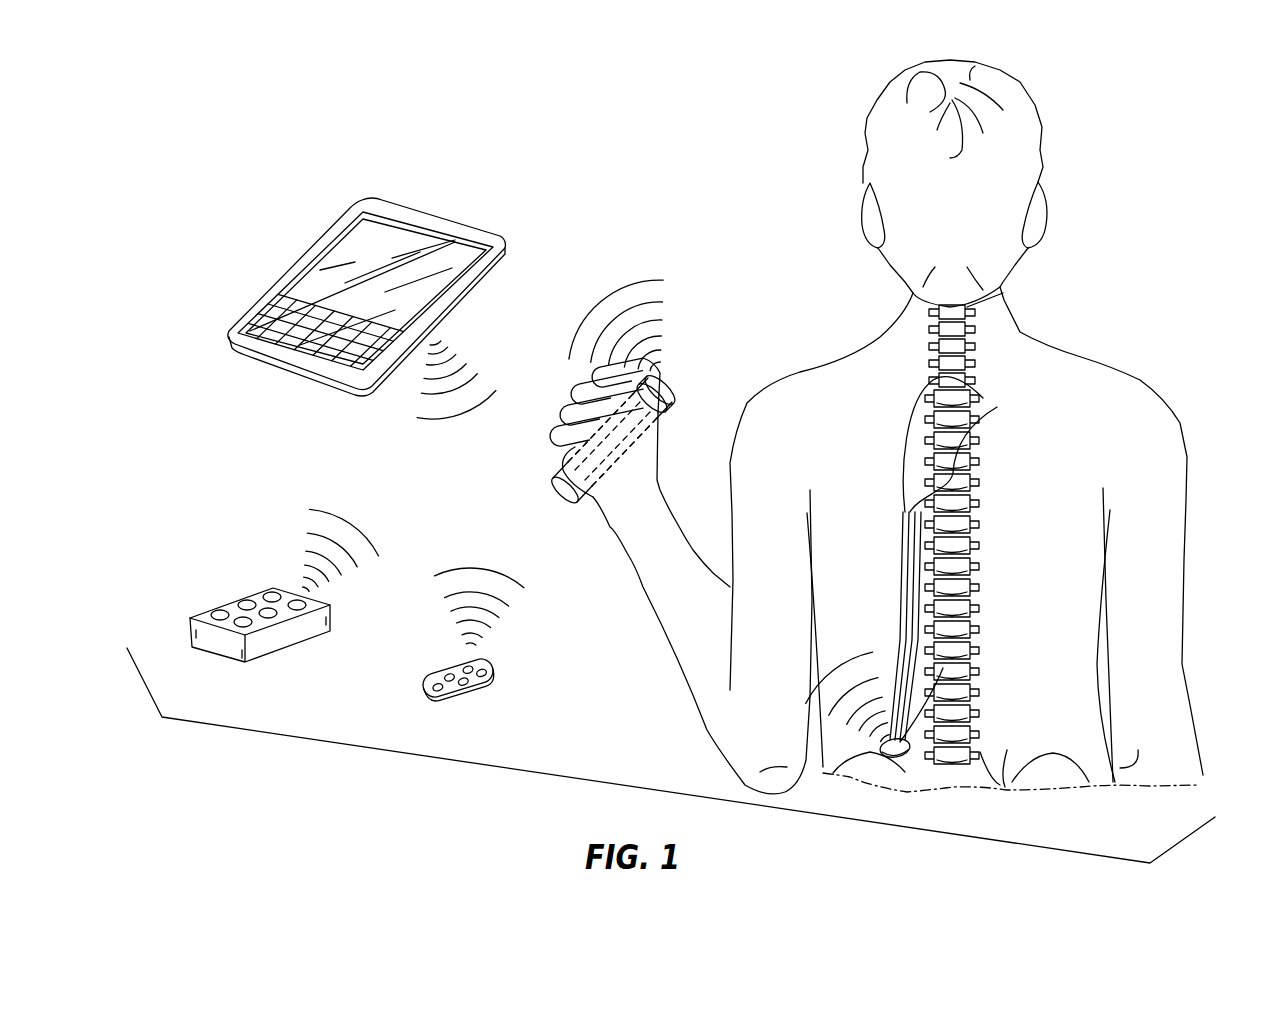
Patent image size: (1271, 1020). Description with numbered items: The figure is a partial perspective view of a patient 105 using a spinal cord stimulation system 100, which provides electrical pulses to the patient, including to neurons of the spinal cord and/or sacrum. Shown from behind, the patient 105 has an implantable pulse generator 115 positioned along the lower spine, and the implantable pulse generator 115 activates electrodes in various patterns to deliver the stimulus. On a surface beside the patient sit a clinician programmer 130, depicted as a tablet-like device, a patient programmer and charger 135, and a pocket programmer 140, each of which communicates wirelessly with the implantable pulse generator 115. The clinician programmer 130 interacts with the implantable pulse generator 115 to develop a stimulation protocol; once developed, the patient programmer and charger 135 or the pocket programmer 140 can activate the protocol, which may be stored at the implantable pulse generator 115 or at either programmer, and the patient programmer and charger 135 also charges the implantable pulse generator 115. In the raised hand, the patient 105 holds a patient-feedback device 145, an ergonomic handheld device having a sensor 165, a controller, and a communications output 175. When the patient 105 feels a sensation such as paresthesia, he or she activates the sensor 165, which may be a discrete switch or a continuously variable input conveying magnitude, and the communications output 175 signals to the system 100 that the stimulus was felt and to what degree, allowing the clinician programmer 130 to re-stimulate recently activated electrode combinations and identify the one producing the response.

The spinal cord stimulation system 100 is at (396, 753).
The patient 105 is at (1188, 460).
The implantable pulse generator 115 is at (887, 757).
The clinician programmer 130 is at (447, 212).
The patient programmer and charger 135 is at (285, 633).
The pocket programmer 140 is at (490, 676).
The patient-feedback device 145 is at (558, 498).
The sensor 165 is at (660, 432).
The communications output 175 is at (673, 380).